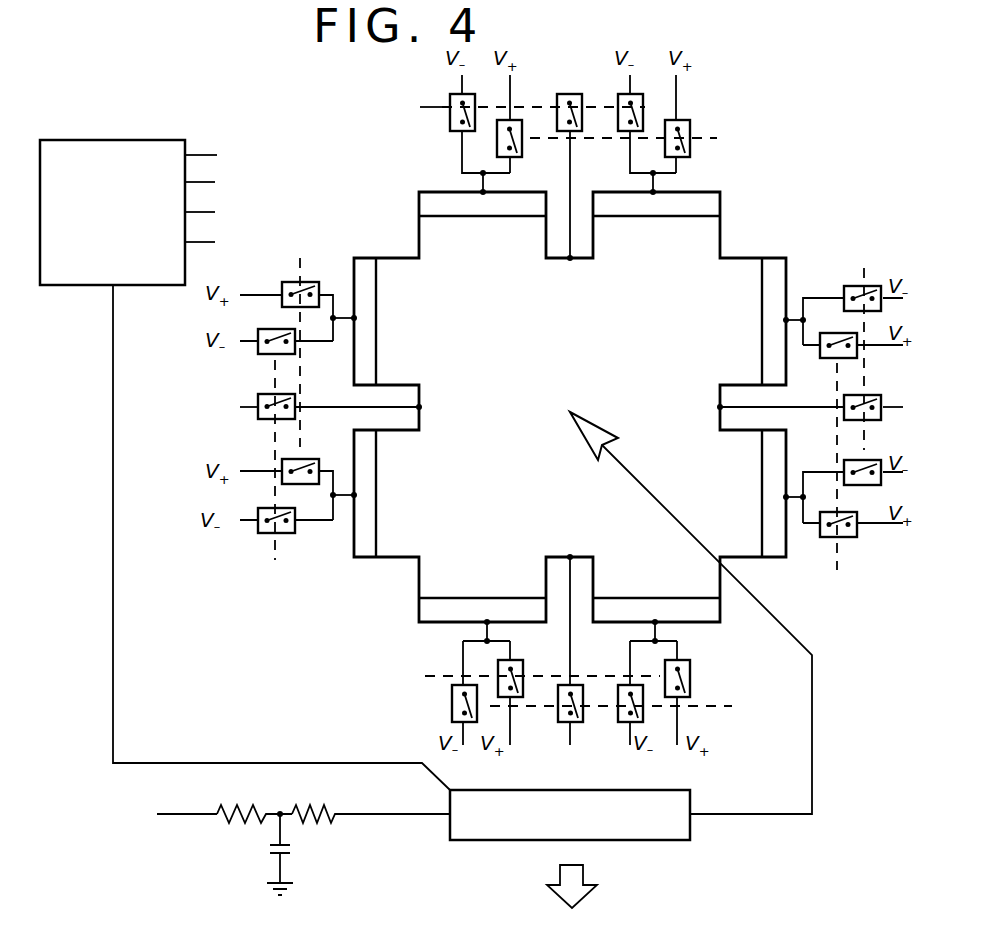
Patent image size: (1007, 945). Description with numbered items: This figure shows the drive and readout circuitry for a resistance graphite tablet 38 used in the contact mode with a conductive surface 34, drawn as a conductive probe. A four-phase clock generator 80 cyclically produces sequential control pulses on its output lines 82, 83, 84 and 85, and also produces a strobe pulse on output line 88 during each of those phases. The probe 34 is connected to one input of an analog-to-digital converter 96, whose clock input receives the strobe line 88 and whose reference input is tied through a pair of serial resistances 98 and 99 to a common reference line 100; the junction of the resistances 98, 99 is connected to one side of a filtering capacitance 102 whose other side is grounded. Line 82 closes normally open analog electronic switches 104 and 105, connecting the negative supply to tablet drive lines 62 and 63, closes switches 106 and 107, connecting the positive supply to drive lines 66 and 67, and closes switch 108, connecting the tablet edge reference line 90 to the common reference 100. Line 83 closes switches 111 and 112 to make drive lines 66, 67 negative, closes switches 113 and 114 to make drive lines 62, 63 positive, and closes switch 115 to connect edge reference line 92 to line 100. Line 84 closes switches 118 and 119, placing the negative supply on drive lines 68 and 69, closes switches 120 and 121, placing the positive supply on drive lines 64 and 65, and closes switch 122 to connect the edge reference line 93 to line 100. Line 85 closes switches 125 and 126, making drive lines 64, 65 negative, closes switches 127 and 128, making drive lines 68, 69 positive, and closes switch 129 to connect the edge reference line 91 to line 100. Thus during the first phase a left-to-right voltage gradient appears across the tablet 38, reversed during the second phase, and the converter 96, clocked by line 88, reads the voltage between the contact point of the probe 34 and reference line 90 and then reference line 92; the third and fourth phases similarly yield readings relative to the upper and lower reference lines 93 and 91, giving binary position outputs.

The conductive surface 34 is at (603, 433).
The graphite tablet 38 is at (417, 272).
The tablet drive line 62 is at (786, 320).
The tablet drive line 63 is at (786, 497).
The tablet drive line 64 is at (653, 620).
The tablet drive line 65 is at (486, 620).
The tablet drive line 66 is at (356, 493).
The tablet drive line 67 is at (356, 316).
The tablet drive line 68 is at (482, 192).
The tablet drive line 69 is at (655, 192).
The four-phase clock generator circuit 80 is at (107, 150).
The output line 82 is at (214, 155).
The output line 83 is at (215, 182).
The output line 84 is at (215, 212).
The output line 85 is at (215, 242).
The output line 88 is at (113, 507).
The tablet edge reference line 90 is at (755, 408).
The edge reference line 91 is at (572, 562).
The tablet edge reference line 92 is at (383, 407).
The edge voltage reference line 93 is at (573, 236).
The analog-to-digital converter 96 is at (450, 829).
The serial resistance 98 is at (328, 800).
The serial resistance 99 is at (262, 800).
The common reference line 100 is at (176, 813).
The filtering capacitance 102 is at (288, 849).
The normally open analog electronic switch 104 is at (880, 311).
The normally open analog electronic switch 105 is at (878, 481).
The normally open analog electronic switch 106 is at (282, 482).
The normally open analog electronic switch 107 is at (288, 285).
The normally open analog electronic switch 108 is at (870, 396).
The normally open analog electronic switch 111 is at (262, 534).
The normally open analog electronic switch 112 is at (283, 353).
The normally open analog electronic switch 113 is at (833, 359).
The normally open analog electronic switch 114 is at (852, 536).
The normally open analog electronic switch 115 is at (262, 418).
The normally open analog electronic switch 118 is at (450, 126).
The normally open analog electronic switch 119 is at (645, 108).
The normally open analog electronic switch 120 is at (690, 671).
The normally open analog electronic switch 121 is at (523, 670).
The normally open analog electronic switch 122 is at (580, 131).
The normally open analog electronic switch 125 is at (618, 723).
The normally open analog electronic switch 126 is at (455, 698).
The normally open analog electronic switch 127 is at (516, 148).
The normally open analog electronic switch 128 is at (688, 122).
The normally open analog electronic switch 129 is at (560, 717).